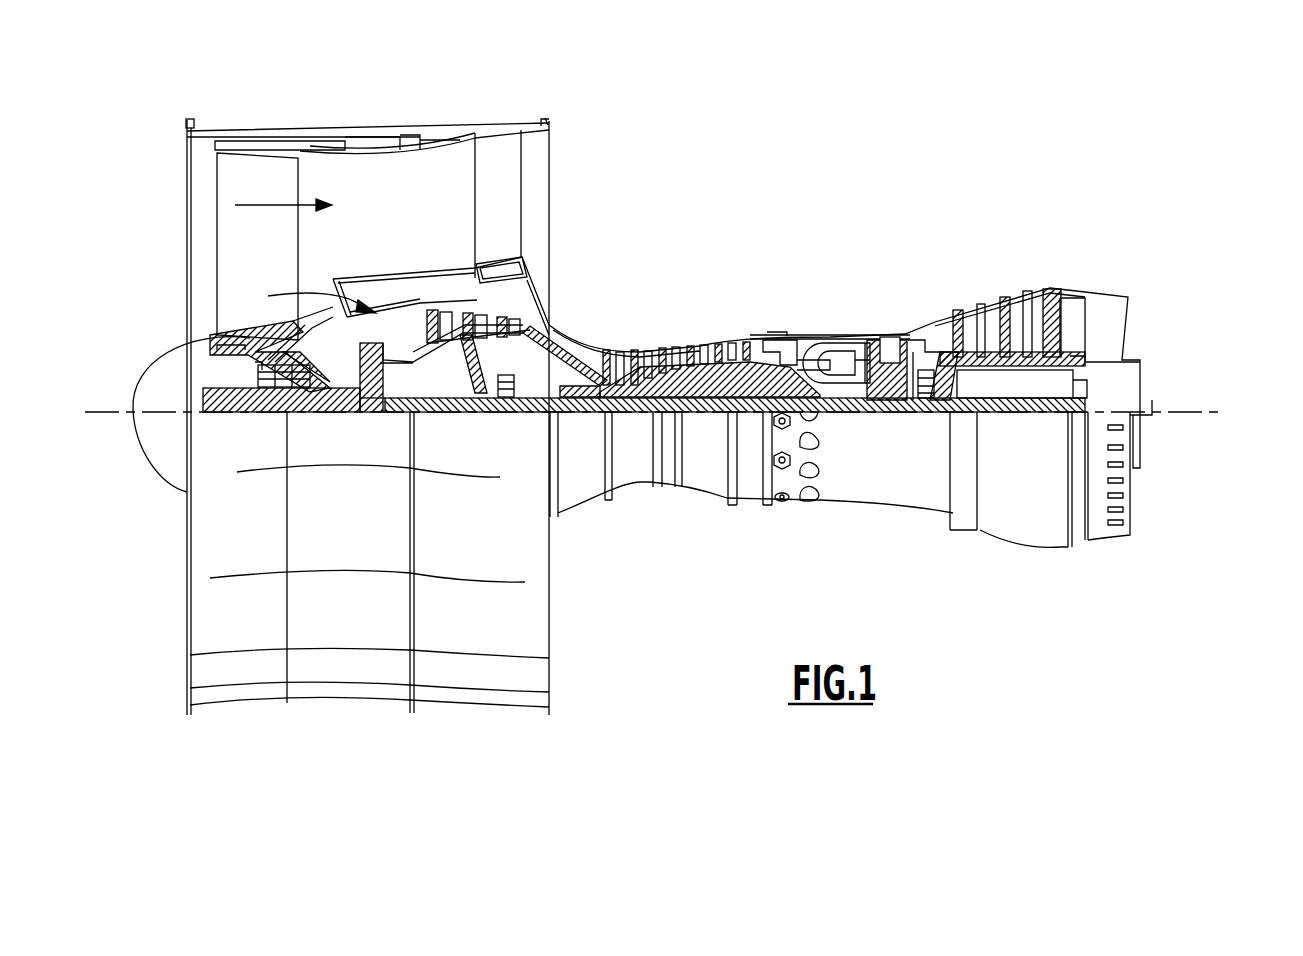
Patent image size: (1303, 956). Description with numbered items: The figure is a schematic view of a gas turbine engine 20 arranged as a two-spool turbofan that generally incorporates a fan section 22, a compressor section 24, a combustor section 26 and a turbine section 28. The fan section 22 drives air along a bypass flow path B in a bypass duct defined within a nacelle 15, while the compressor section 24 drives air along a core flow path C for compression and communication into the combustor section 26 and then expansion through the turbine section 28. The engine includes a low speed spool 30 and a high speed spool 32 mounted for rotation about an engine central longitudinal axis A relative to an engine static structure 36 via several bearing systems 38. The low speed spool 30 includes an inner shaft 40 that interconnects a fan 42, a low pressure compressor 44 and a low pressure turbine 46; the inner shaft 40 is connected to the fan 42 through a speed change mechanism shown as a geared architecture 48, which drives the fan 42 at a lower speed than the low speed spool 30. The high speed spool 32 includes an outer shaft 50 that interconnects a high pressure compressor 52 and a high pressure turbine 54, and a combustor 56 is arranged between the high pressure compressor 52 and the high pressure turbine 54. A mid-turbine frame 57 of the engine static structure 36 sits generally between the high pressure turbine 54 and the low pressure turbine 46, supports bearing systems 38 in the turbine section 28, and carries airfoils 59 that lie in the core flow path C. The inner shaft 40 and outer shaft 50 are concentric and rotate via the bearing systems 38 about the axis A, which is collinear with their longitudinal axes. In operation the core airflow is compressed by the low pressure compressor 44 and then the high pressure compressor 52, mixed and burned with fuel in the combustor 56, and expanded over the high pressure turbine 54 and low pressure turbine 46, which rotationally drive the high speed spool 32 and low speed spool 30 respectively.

The nacelle 15 is at (370, 132).
The gas turbine engine 20 is at (836, 177).
The fan section 22 is at (296, 114).
The compressor section 24 is at (606, 312).
The combustor section 26 is at (822, 297).
The turbine section 28 is at (976, 263).
The low speed spool 30 is at (707, 432).
The high speed spool 32 is at (752, 348).
The engine static structure 36 is at (748, 515).
The bearing systems 38 is at (507, 392).
The inner shaft 40 is at (567, 425).
The fan 42 is at (272, 259).
The low pressure compressor 44 is at (467, 327).
The low pressure turbine 46 is at (1018, 296).
The geared architecture 48 is at (377, 397).
The outer shaft 50 is at (833, 413).
The high pressure compressor 52 is at (675, 377).
The high pressure turbine 54 is at (887, 333).
The combustor 56 is at (823, 354).
The mid-turbine frame 57 is at (937, 309).
The airfoils 59 is at (920, 345).
The engine central longitudinal axis A is at (1224, 412).
The bypass flow path B is at (277, 203).
The core flow path C is at (314, 295).